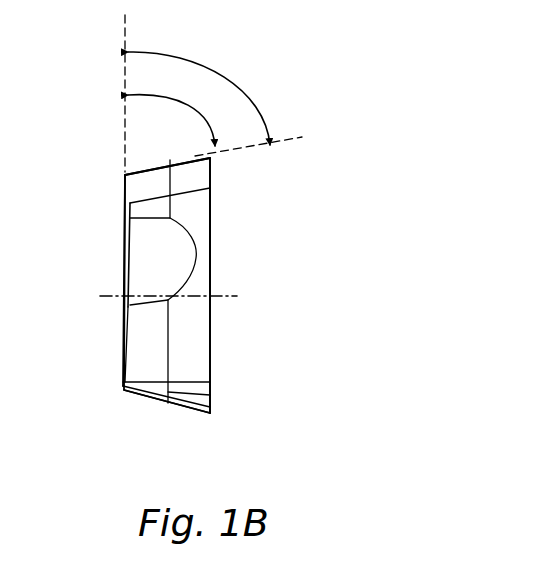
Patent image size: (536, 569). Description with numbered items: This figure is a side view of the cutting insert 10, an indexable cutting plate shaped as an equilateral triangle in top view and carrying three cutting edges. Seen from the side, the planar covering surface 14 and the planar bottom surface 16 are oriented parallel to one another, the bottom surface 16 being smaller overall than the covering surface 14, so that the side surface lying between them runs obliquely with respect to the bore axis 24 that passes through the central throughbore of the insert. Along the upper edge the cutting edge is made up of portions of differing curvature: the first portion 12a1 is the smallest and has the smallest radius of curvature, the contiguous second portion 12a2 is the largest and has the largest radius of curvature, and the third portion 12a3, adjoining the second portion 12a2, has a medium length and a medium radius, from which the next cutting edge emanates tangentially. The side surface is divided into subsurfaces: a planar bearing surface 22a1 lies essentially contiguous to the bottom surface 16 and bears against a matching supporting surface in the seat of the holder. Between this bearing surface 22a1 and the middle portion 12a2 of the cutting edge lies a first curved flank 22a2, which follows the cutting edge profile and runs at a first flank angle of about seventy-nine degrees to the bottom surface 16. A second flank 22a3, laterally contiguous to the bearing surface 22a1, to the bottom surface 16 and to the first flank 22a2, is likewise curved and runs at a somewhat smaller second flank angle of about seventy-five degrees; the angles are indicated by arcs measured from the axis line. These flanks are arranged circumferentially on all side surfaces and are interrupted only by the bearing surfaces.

The cutting insert 10 is at (100, 148).
The first portion of cutting edge 12a1 is at (212, 388).
The second portion of cutting edge 12a2 is at (211, 270).
The third portion of cutting edge 12a3 is at (211, 172).
The covering surface 14 is at (211, 222).
The bottom surface 16 is at (124, 258).
The planar bearing surface 22a1 is at (142, 278).
The first curved flank 22a2 is at (197, 350).
The second flank 22a3 is at (142, 363).
The bore axis 24 is at (232, 298).